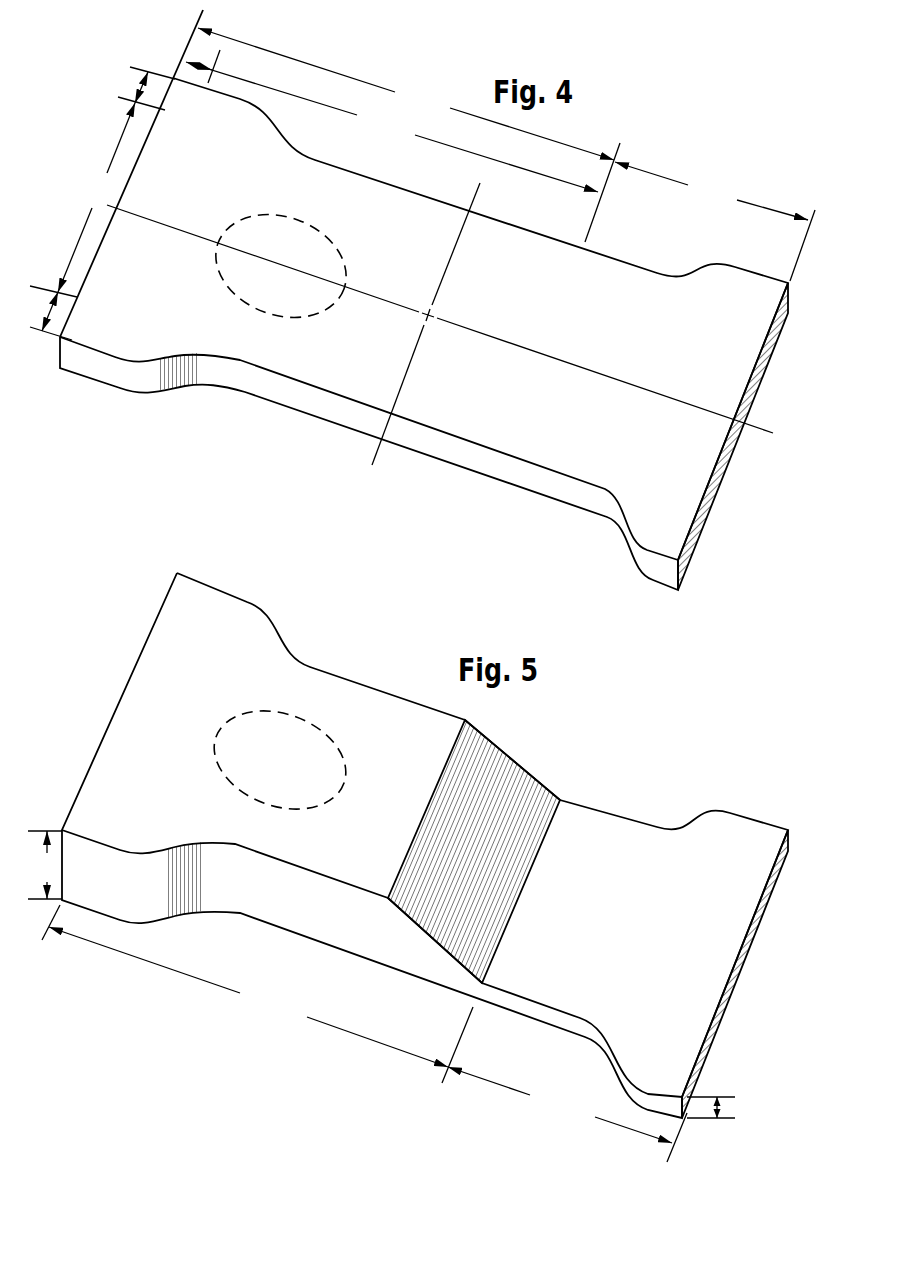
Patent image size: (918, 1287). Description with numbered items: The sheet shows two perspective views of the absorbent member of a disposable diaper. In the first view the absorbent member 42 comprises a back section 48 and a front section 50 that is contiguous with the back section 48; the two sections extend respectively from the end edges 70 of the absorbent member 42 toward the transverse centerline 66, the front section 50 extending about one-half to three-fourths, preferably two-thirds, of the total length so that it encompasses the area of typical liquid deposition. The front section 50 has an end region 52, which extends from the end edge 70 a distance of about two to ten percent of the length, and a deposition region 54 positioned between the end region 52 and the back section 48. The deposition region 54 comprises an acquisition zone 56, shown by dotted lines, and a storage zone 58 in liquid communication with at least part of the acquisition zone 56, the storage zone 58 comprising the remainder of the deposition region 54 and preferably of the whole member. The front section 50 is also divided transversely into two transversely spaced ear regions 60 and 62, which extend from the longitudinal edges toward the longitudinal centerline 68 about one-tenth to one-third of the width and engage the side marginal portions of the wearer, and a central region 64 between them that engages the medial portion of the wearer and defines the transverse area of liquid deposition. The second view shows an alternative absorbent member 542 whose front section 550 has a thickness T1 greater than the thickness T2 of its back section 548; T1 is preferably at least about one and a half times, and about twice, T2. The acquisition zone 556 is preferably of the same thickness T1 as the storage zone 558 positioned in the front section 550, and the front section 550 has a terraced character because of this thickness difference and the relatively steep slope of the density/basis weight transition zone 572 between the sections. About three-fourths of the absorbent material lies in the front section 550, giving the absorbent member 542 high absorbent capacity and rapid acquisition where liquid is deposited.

In FIG. 4, the absorbent member 42 is at (413, 299).
In FIG. 4, the back section 48 is at (715, 221).
In FIG. 4, the front section 50 is at (409, 135).
In FIG. 4, the end region 52 is at (198, 62).
In FIG. 4, the deposition region 54 is at (392, 127).
In FIG. 4, the acquisition zone 56 is at (308, 245).
In FIG. 4, the storage zone 58 is at (418, 253).
In FIG. 4, the ear region 60 is at (33, 292).
In FIG. 4, the ear region 62 is at (143, 88).
In FIG. 4, the central region 64 is at (96, 197).
In FIG. 4, the transverse centerline 66 is at (478, 203).
In FIG. 4, the longitudinal centerline 68 is at (757, 425).
In FIG. 4, the end edges 70 is at (717, 470).
In FIG. 5, the absorbent member 542 is at (425, 838).
In FIG. 5, the back section 548 is at (567, 1114).
In FIG. 5, the front section 550 is at (257, 994).
In FIG. 5, the acquisition zone 556 is at (283, 725).
In FIG. 5, the storage zone 558 is at (415, 750).
In FIG. 5, the density/basis weight transition zone 572 is at (503, 782).
In FIG. 5, the thickness of the front section T1 is at (45, 865).
In FIG. 5, the thickness of the back section T2 is at (720, 1108).